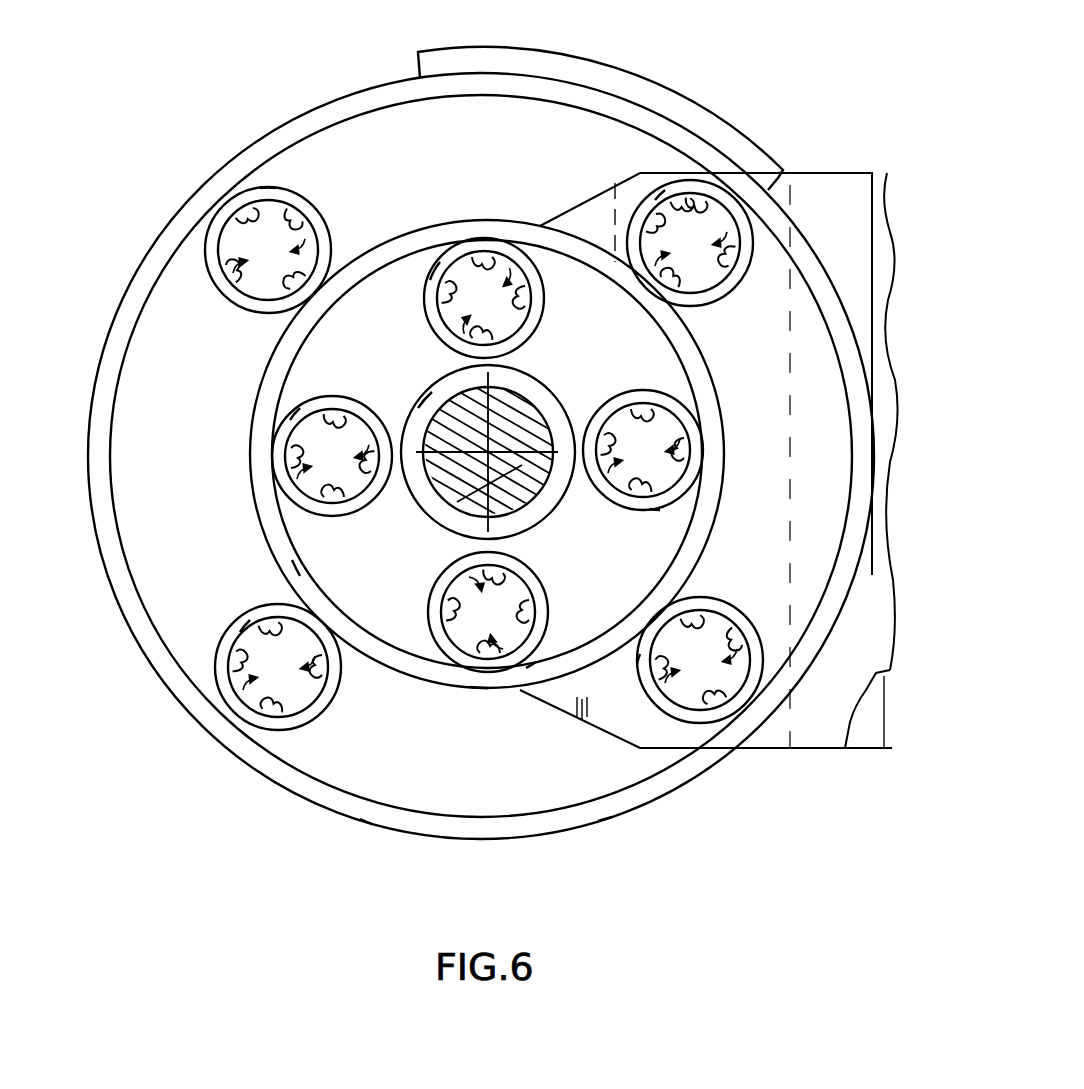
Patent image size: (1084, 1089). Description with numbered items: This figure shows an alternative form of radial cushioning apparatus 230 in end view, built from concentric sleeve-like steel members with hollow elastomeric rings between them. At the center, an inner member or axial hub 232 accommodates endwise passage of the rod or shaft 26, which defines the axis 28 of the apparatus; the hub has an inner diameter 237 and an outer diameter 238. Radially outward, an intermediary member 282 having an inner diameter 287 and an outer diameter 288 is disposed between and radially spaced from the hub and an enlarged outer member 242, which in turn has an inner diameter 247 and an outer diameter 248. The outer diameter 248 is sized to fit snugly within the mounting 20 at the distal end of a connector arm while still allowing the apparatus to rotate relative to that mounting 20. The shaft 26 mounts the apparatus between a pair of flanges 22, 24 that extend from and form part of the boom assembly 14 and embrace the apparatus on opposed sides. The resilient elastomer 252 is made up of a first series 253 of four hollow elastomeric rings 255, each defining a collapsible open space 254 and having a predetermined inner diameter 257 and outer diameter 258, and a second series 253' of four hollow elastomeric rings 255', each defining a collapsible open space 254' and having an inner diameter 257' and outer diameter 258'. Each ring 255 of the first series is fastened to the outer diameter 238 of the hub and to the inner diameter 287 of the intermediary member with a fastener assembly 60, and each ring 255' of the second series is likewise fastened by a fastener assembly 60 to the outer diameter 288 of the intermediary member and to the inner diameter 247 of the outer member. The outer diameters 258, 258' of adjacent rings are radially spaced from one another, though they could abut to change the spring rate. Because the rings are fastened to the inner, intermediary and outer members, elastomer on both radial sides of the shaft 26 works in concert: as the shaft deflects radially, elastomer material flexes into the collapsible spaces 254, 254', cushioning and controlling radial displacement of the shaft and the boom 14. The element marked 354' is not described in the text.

The boom assembly 14 is at (817, 770).
The mounting 20 is at (630, 84).
The flange 22 is at (866, 744).
The flange 24 is at (838, 184).
The rod or shaft 26 is at (462, 502).
The axis 28 is at (440, 481).
The fastener assembly 60 is at (485, 461).
The radial cushioning apparatus 230 is at (158, 132).
The inner member or axial hub 232 is at (547, 390).
The inner diameter 237 is at (536, 488).
The outer diameter 238 is at (420, 410).
The outer member 242 is at (305, 134).
The inner diameter 247 is at (362, 790).
The outer diameter 248 is at (608, 818).
The resilient elastomer 252 is at (208, 322).
The first series of hollow elastomeric rings 253 is at (704, 345).
The second series of hollow elastomeric rings 253' is at (262, 779).
The collapsible open space 254 is at (486, 455).
The collapsible open space 254' is at (428, 503).
The hollow elastomeric ring 255 is at (492, 426).
The hollow elastomeric ring 255' is at (507, 452).
The inner diameter 257 is at (526, 491).
The inner diameter 257' is at (413, 457).
The outer diameter 258 is at (379, 433).
The outer diameter 258' is at (466, 381).
The intermediary member 282 is at (477, 682).
The inner diameter 287 is at (303, 572).
The outer diameter 288 is at (414, 232).
The clutch element 354' is at (735, 151).